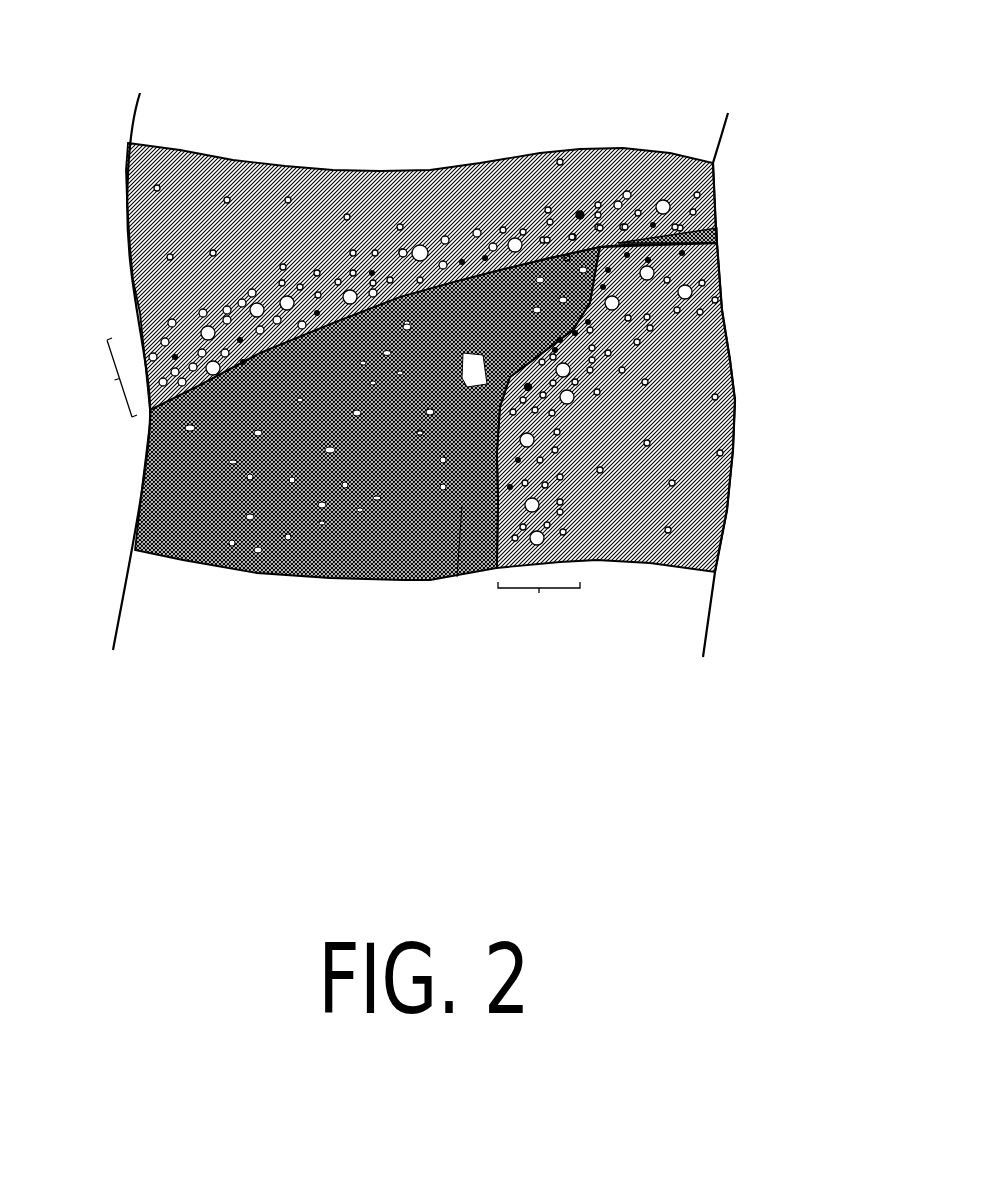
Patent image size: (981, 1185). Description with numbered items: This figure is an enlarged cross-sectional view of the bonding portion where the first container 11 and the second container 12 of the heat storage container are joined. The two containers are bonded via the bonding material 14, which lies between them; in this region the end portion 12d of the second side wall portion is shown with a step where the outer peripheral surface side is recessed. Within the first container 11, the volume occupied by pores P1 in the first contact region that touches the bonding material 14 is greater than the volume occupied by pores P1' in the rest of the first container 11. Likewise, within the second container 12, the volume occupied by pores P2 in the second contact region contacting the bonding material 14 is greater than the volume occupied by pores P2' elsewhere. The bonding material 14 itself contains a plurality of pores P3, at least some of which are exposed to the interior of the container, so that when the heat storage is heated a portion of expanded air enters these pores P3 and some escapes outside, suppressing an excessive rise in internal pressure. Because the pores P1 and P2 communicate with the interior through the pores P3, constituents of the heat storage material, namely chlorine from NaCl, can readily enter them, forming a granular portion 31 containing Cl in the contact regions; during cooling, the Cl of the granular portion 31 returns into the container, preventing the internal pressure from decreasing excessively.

The first container 11 is at (230, 197).
The second container 12 is at (723, 542).
The end portion of the second side wall portion 12d is at (457, 577).
The bonding material 14 is at (410, 580).
The granular portion 31 is at (580, 211).
The pores in the first contact region P1 is at (463, 157).
The pores in region other than first contact region P1' is at (365, 148).
The pores in the second contact region P2 is at (750, 242).
The pores in region other than second contact region P2' is at (722, 389).
The pores of the bonding material P3 is at (255, 565).